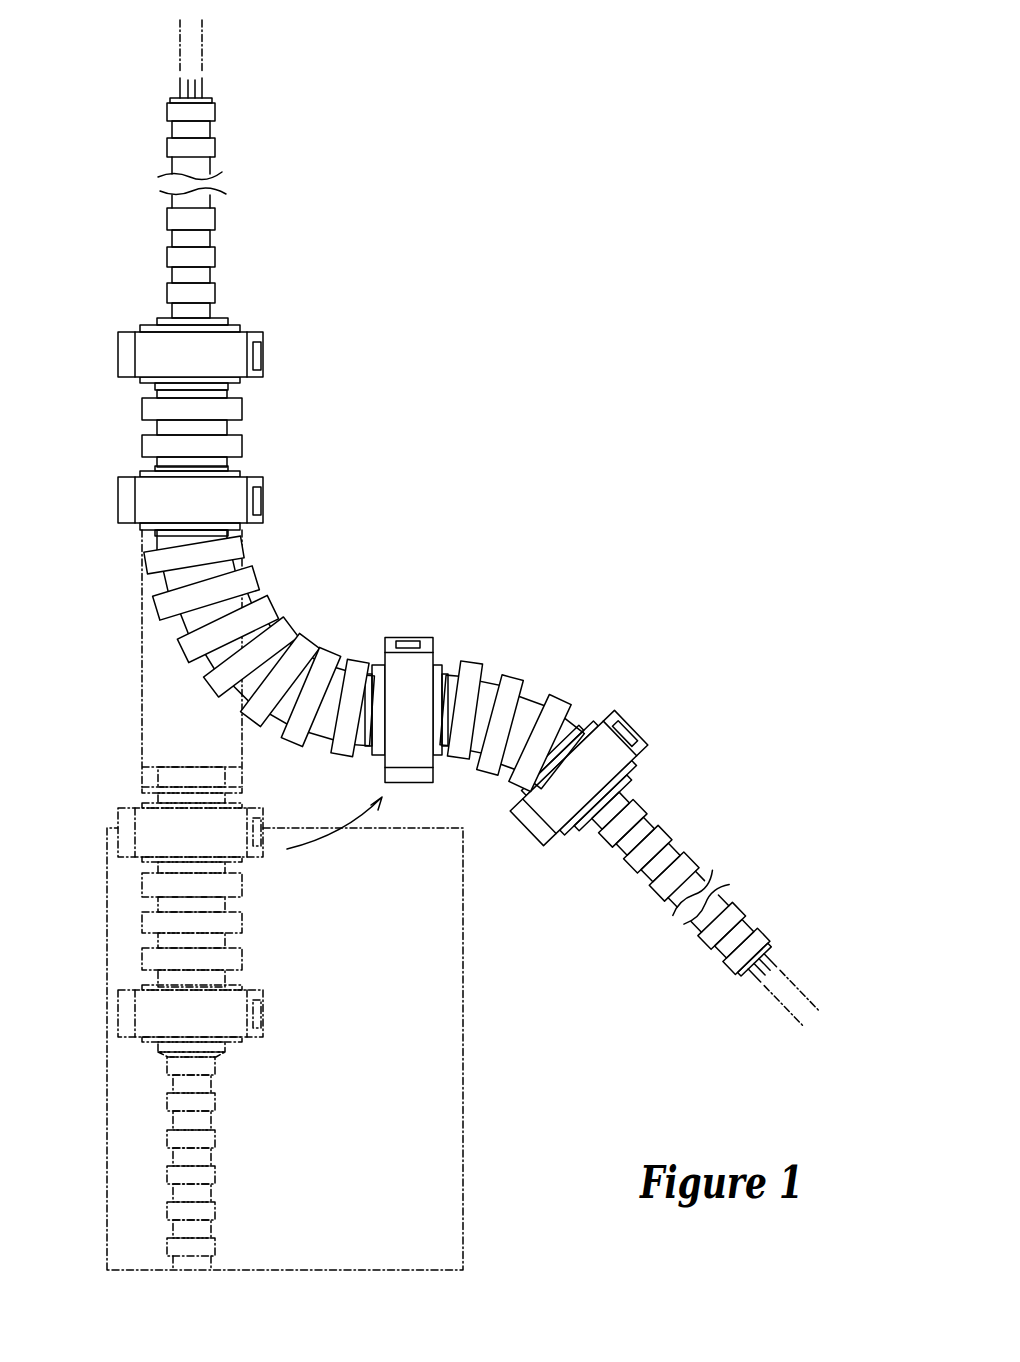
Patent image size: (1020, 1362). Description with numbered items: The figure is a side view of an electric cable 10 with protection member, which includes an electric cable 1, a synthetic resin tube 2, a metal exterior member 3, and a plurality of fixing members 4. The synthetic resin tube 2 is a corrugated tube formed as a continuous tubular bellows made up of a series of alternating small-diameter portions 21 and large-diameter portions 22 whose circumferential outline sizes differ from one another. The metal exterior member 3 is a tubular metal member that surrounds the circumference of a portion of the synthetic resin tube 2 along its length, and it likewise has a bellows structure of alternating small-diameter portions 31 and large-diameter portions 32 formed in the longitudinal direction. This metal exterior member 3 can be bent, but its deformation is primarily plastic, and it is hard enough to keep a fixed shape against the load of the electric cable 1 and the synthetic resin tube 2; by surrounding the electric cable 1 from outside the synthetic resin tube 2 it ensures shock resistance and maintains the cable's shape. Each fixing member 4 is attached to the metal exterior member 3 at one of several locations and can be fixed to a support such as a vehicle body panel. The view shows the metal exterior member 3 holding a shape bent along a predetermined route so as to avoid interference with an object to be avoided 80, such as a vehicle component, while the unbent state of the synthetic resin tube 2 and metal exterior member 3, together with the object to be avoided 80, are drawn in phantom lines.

The electric cable 1 is at (198, 89).
The synthetic resin tube 2 is at (461, 678).
The metal exterior member 3 is at (248, 922).
The fixing member 4 is at (284, 498).
The electric cable with protection member 10 is at (439, 107).
The small-diameter portion 21 is at (172, 242).
The large-diameter portion 22 is at (215, 257).
The small-diameter portion 31 is at (175, 631).
The large-diameter portion 32 is at (213, 695).
The object to be avoided 80 is at (466, 1062).